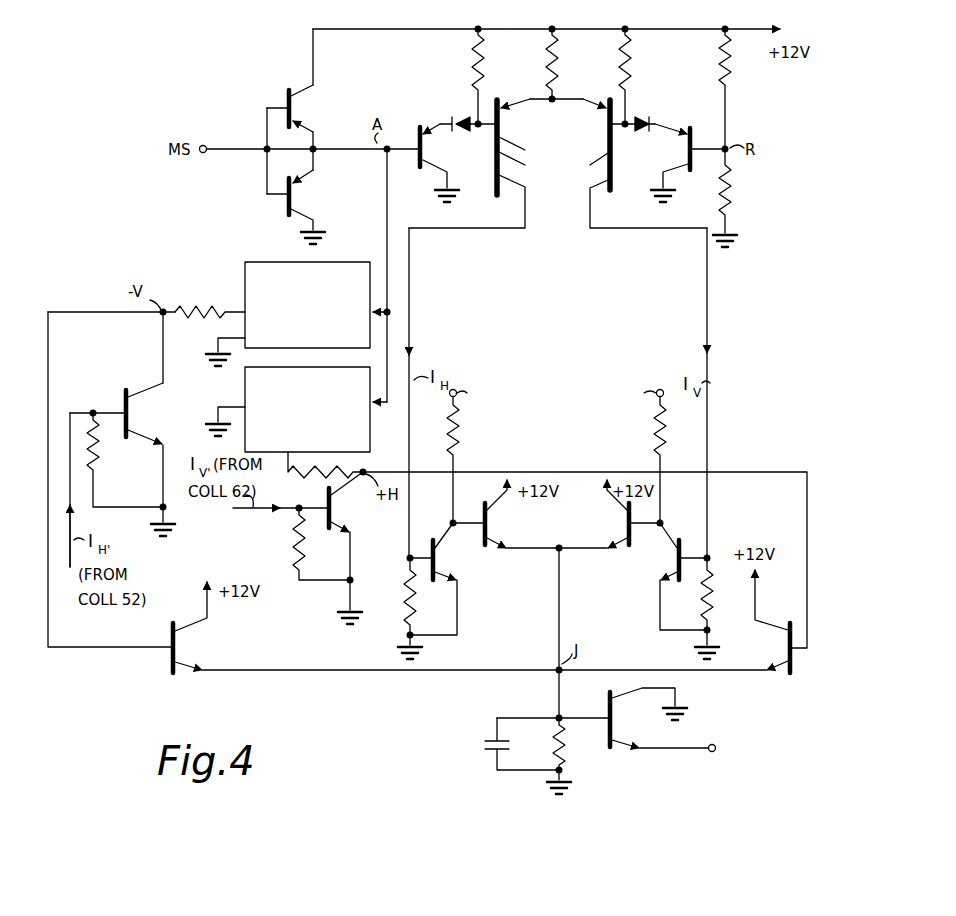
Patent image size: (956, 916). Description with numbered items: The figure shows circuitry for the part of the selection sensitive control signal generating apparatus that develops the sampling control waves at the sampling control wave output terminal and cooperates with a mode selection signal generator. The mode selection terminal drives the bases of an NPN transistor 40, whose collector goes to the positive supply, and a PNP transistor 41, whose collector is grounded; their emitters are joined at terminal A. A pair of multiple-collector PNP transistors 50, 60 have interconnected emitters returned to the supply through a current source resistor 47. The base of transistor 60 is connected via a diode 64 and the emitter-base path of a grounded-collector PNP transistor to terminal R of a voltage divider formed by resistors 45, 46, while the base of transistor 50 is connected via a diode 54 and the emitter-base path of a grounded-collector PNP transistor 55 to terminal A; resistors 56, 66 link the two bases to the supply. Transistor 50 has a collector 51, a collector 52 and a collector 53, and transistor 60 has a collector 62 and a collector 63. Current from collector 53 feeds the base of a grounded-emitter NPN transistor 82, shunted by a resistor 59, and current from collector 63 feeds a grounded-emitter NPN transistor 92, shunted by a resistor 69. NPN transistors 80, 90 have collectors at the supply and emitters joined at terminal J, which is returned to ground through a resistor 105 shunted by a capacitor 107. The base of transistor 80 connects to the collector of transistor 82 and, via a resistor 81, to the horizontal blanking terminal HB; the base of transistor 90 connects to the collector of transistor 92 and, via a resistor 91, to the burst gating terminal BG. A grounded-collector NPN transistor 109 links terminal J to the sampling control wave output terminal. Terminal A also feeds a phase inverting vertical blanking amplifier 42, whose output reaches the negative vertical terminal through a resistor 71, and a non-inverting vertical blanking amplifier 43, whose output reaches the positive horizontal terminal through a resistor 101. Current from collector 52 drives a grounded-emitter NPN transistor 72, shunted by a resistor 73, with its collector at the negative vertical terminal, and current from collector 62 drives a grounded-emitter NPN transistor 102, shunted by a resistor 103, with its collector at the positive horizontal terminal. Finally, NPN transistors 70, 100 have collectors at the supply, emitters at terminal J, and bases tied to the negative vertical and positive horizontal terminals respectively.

The NPN transistor 40 is at (288, 92).
The PNP transistor 41 is at (287, 210).
The phase inverting vertical blanking amplifier 42 is at (244, 263).
The non-inverting vertical blanking amplifier 43 is at (238, 390).
The resistor 45 is at (733, 64).
The resistor 46 is at (733, 184).
The current source resistor 47 is at (558, 63).
The multiple-collector PNP transistor 50 is at (500, 94).
The collector 51 is at (501, 136).
The collector electrode 52 is at (518, 162).
The collector 53 is at (520, 188).
The diode 54 is at (454, 118).
The grounded-collector PNP transistor 55 is at (422, 130).
The resistor 56 is at (473, 50).
The resistor 59 is at (406, 600).
The multiple-collector PNP transistor 60 is at (608, 96).
The collector electrode 62 is at (589, 165).
The collector 63 is at (589, 188).
The diode 64 is at (652, 122).
The resistor 66 is at (632, 63).
The resistor 69 is at (700, 604).
The NPN transistor 70 is at (164, 625).
The resistor 71 is at (210, 304).
The grounded-emitter NPN transistor 72 is at (122, 394).
The resistor 73 is at (96, 462).
The NPN transistor 80 is at (482, 552).
The resistor 81 is at (464, 430).
The grounded-emitter NPN transistor 82 is at (439, 540).
The NPN transistor 90 is at (638, 552).
The resistor 91 is at (655, 434).
The grounded-emitter NPN transistor 92 is at (684, 538).
The NPN transistor 100 is at (790, 614).
The resistor 101 is at (308, 478).
The grounded-emitter NPN transistor 102 is at (322, 540).
The resistor 103 is at (297, 546).
The resistor 105 is at (566, 750).
The capacitor 107 is at (487, 747).
The grounded-collector NPN transistor 109 is at (604, 705).